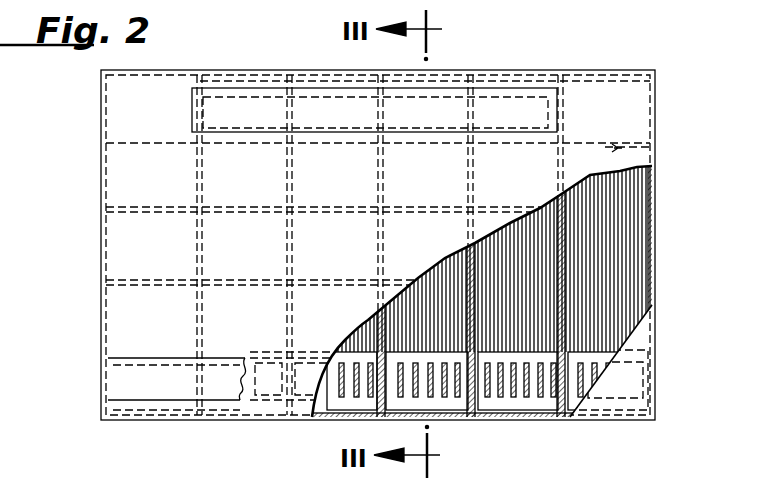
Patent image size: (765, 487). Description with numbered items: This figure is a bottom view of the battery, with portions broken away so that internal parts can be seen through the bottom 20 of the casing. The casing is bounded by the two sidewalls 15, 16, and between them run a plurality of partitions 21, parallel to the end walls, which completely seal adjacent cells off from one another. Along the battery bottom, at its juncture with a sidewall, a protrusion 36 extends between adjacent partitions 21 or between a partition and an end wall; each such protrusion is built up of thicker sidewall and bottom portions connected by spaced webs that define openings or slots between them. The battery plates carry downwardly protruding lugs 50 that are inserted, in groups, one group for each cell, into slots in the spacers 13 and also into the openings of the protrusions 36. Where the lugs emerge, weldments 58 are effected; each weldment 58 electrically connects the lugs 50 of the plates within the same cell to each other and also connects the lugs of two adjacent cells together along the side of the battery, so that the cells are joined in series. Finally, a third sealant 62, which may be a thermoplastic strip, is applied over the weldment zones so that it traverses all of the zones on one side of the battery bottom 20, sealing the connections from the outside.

The spacers 13 is at (235, 82).
The sidewall 15 is at (563, 420).
The sidewall 16 is at (510, 72).
The bottom 20 is at (139, 236).
The partitions 21 is at (208, 187).
The protrusion 36 is at (663, 147).
The lugs 50 is at (507, 390).
The weldments 58 is at (268, 388).
The third sealant 62 is at (258, 112).